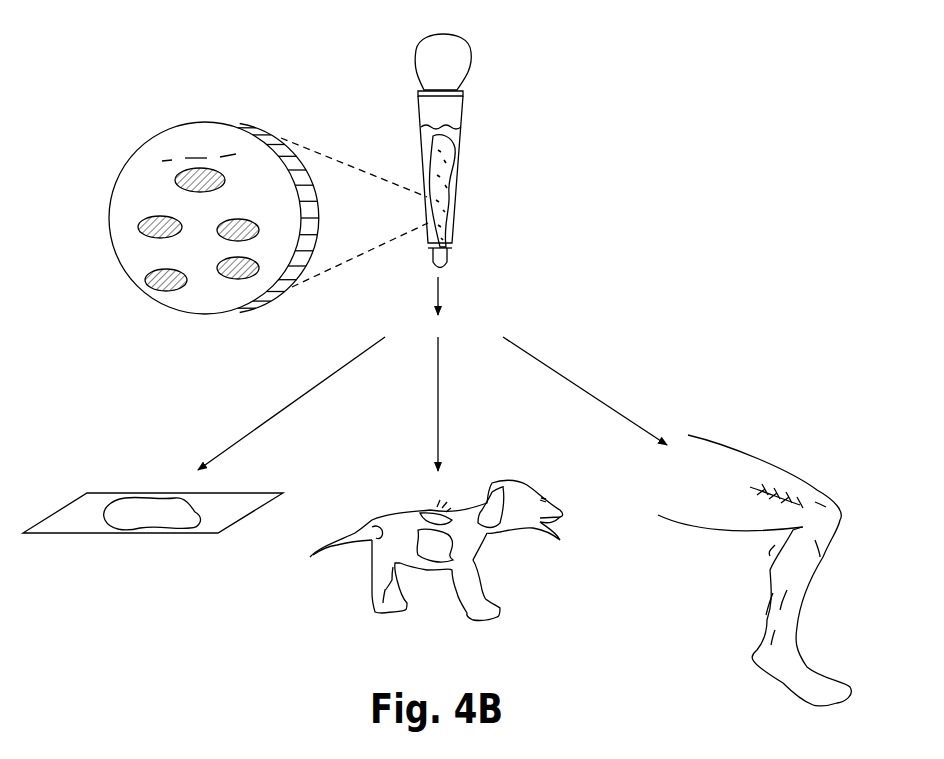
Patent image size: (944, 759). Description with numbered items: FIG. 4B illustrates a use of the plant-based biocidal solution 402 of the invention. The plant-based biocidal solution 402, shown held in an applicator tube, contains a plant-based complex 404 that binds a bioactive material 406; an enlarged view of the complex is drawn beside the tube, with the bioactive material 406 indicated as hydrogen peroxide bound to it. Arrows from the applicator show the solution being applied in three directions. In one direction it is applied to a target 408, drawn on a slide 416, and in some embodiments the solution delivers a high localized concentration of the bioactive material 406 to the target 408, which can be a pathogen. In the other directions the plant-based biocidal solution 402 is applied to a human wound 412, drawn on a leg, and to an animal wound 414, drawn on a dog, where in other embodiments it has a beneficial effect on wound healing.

The plant-based biocidal solution 402 is at (448, 155).
The plant-based complex 404 is at (148, 110).
The bioactive material 406 is at (150, 163).
The target 408 is at (150, 520).
The human wound 412 is at (786, 480).
The animal wound 414 is at (426, 494).
The slide 416 is at (106, 556).